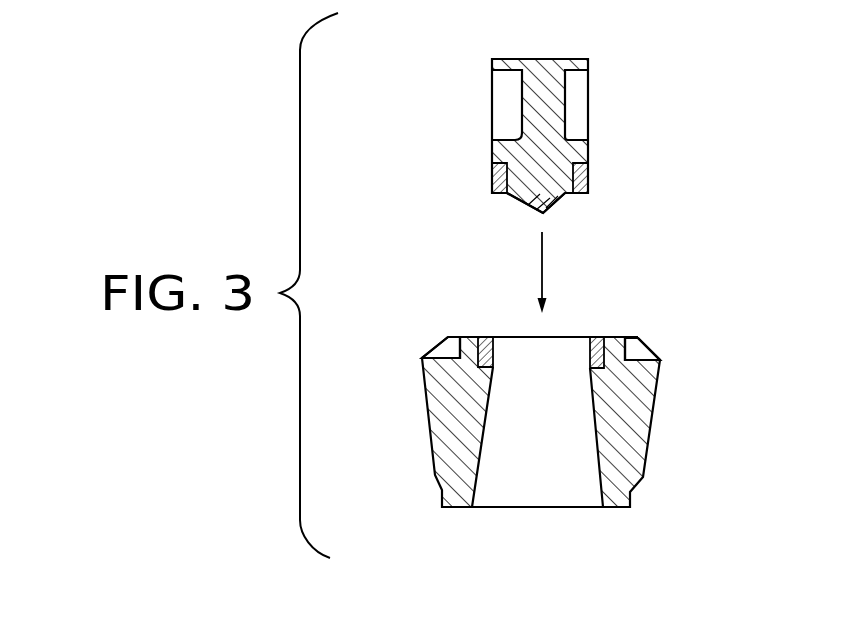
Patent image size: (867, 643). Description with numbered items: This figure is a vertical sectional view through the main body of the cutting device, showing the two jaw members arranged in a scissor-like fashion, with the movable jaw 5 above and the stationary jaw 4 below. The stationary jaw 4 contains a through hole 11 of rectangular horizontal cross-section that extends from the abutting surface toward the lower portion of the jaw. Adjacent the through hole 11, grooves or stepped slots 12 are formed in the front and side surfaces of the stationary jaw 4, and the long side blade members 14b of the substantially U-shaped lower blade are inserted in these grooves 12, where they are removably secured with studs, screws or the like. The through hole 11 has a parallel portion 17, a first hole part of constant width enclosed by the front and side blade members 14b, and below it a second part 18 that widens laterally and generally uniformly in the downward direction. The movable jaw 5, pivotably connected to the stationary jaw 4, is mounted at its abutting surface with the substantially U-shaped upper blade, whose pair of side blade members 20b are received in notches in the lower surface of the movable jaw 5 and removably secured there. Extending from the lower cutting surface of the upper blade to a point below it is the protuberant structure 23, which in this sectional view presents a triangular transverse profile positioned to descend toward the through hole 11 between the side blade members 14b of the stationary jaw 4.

The movable jaw 5 is at (588, 60).
The side blade members 20b is at (492, 178).
The protuberant structure 23 is at (552, 208).
The stationary jaw 4 is at (652, 437).
The through hole 11 is at (583, 305).
The side blade members 14b is at (487, 337).
The grooves 12 is at (477, 337).
The parallel portion 17 is at (530, 357).
The second part 18 is at (553, 467).